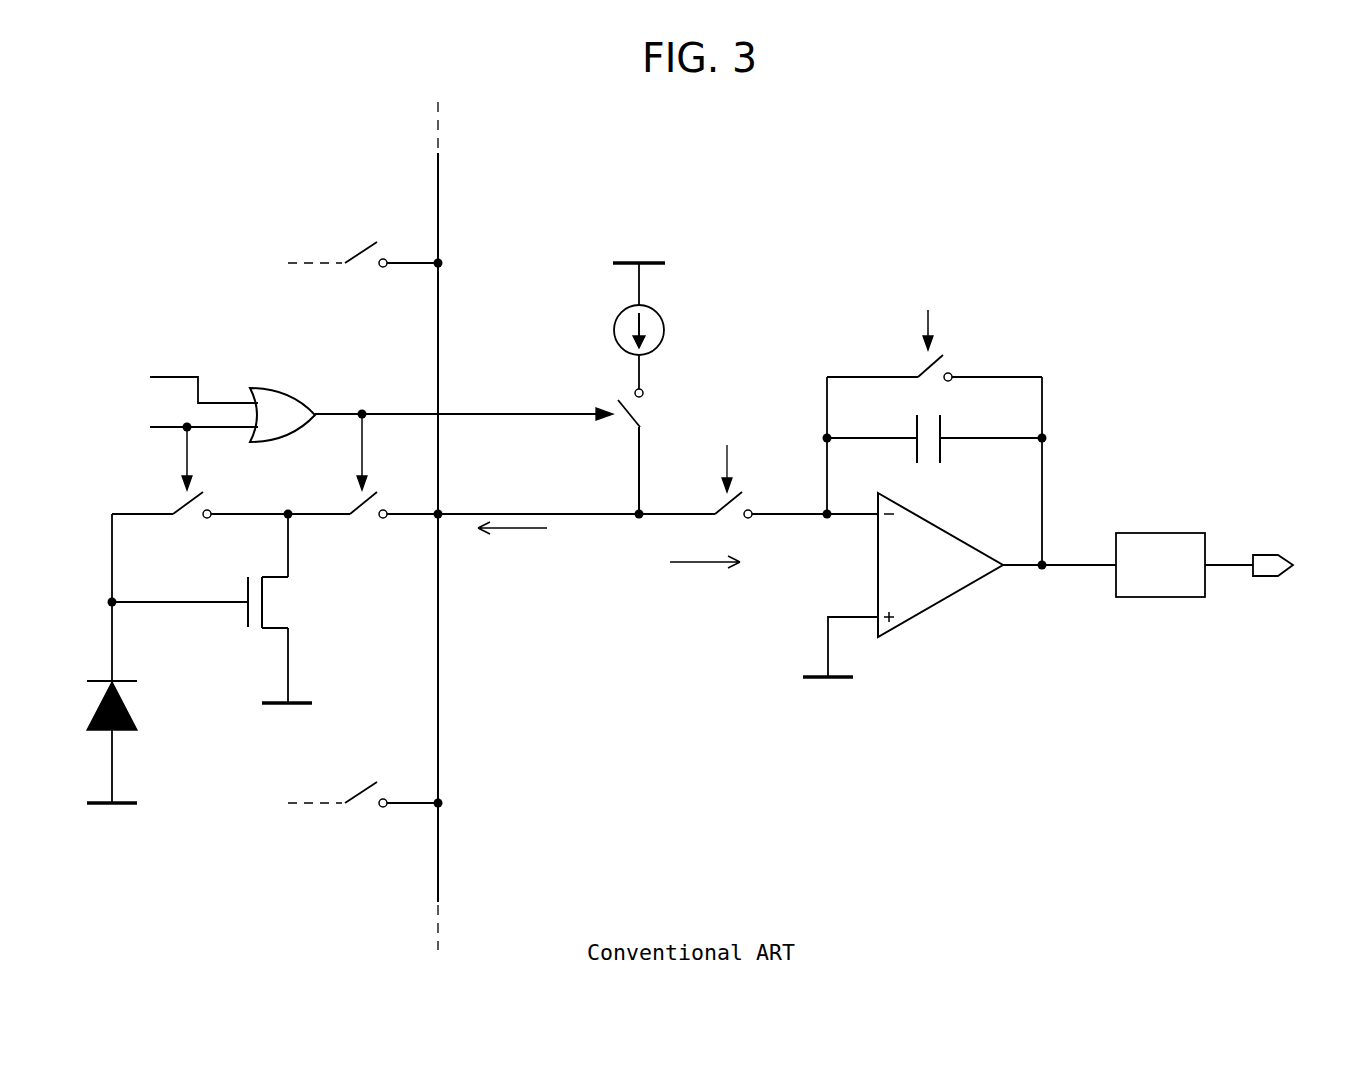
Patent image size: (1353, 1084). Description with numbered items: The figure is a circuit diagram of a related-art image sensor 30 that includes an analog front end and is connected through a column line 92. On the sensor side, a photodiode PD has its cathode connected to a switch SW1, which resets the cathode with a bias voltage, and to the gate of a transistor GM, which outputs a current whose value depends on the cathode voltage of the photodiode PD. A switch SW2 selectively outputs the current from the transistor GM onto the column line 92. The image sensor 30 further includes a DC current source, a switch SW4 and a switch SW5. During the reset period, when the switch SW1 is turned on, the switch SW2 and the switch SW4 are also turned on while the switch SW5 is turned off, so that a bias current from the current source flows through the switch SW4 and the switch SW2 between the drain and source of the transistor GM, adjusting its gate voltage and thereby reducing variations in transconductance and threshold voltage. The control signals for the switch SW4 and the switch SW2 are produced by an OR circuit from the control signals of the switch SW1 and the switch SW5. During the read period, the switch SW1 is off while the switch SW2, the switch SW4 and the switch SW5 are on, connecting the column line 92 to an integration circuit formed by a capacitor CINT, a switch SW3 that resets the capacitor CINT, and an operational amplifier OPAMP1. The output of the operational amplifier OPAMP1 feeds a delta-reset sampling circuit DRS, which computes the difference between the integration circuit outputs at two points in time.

The image sensor 30 is at (136, 123).
The column line 92 is at (438, 852).
The switch SW1 is at (192, 522).
The switch SW2 is at (365, 542).
The switch SW3 is at (955, 383).
The switch SW4 is at (615, 426).
The switch SW5 is at (732, 522).
The photodiode PD is at (98, 705).
The transistor GM is at (265, 602).
The capacitor CINT is at (934, 455).
The operational amplifier OPAMP1 is at (940, 565).
The delta-reset sampling circuit DRS is at (1160, 565).